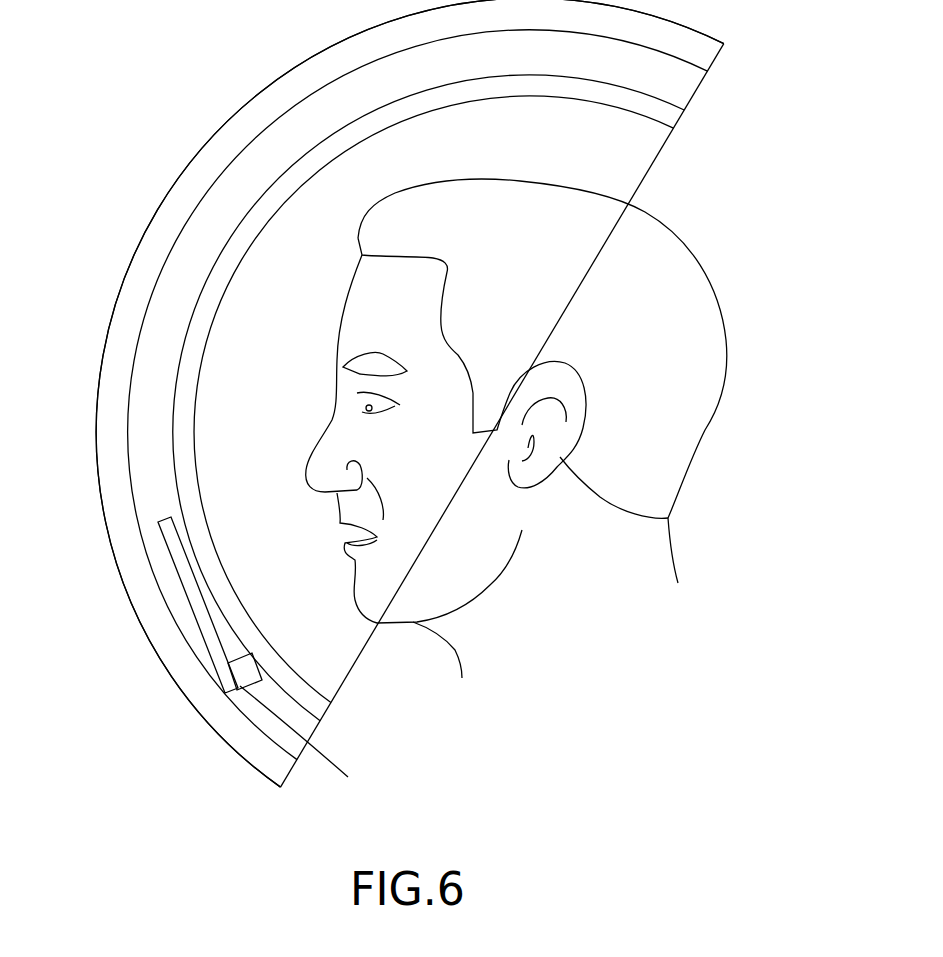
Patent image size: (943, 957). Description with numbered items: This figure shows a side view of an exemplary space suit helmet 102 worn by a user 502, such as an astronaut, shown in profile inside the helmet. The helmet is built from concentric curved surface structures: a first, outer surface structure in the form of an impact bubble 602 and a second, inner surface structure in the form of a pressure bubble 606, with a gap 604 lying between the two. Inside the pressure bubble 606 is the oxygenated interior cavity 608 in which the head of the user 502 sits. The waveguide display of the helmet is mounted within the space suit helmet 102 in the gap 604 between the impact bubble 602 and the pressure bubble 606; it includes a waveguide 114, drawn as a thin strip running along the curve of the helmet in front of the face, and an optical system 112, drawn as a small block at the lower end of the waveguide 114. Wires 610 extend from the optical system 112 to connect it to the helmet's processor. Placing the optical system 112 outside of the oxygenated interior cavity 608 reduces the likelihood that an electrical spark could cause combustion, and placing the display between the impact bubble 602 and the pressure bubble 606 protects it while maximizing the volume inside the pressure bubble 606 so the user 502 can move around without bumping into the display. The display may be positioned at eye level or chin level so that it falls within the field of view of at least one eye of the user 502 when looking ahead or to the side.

The space suit helmet 102 is at (121, 44).
The optical system 112 is at (242, 682).
The waveguide 114 is at (197, 600).
The user 502 is at (705, 305).
The impact bubble 602 is at (711, 56).
The gap 604 is at (686, 90).
The pressure bubble 606 is at (672, 117).
The interior cavity 608 is at (639, 167).
The wires 610 is at (330, 764).